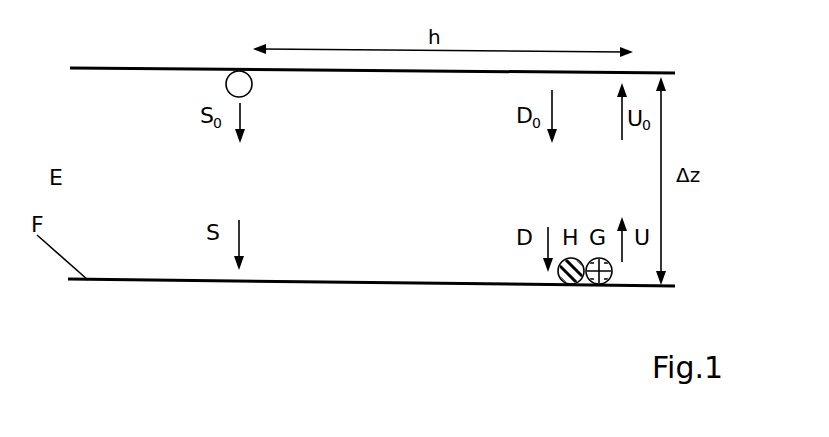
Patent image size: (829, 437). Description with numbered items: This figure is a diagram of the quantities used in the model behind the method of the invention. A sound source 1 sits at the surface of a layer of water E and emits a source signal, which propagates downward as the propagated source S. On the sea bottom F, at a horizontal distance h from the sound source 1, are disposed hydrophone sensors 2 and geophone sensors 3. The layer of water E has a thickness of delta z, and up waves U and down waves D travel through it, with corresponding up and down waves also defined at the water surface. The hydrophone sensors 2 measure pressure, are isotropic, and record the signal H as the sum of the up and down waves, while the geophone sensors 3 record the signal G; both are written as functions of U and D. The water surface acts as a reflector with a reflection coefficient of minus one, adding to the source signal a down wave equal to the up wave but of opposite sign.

The sound source 1 is at (237, 71).
The hydrophone sensors 2 is at (568, 284).
The geophone sensors 3 is at (600, 284).